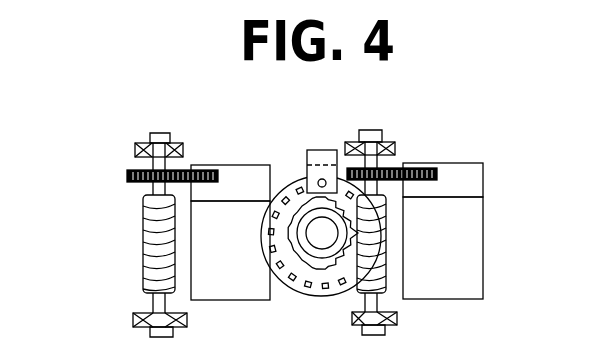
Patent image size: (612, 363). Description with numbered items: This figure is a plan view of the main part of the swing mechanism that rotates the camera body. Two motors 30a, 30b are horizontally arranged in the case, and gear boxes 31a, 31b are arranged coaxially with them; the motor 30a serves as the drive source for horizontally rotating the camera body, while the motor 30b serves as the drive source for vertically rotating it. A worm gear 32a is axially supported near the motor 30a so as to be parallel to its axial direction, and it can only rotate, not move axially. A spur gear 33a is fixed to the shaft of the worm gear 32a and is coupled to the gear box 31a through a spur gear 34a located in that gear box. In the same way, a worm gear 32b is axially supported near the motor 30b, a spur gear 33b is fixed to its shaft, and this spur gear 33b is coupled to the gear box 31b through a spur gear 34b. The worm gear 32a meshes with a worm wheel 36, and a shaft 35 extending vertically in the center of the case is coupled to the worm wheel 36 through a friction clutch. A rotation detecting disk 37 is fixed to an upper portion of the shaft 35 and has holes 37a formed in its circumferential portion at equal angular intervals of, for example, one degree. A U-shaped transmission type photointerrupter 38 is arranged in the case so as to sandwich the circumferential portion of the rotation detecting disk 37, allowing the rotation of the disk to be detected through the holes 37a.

The motor 30a is at (463, 276).
The motor 30b is at (215, 272).
The gear box 31a is at (468, 185).
The gear box 31b is at (240, 172).
The worm gear 32a is at (386, 264).
The worm gear 32b is at (148, 252).
The spur gear 33a is at (390, 168).
The spur gear 33b is at (130, 172).
The spur gear 34a is at (427, 163).
The spur gear 34b is at (202, 165).
The shaft 35 is at (300, 283).
The worm wheel 36 is at (293, 196).
The rotation detecting disk 37 is at (292, 285).
The holes 37a is at (336, 288).
The transmission type photointerrupter 38 is at (327, 150).